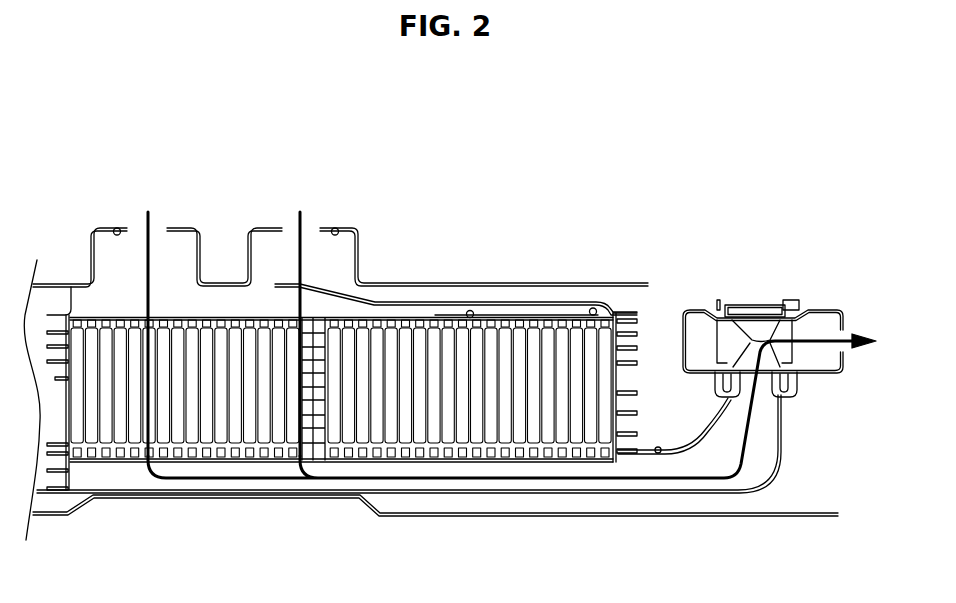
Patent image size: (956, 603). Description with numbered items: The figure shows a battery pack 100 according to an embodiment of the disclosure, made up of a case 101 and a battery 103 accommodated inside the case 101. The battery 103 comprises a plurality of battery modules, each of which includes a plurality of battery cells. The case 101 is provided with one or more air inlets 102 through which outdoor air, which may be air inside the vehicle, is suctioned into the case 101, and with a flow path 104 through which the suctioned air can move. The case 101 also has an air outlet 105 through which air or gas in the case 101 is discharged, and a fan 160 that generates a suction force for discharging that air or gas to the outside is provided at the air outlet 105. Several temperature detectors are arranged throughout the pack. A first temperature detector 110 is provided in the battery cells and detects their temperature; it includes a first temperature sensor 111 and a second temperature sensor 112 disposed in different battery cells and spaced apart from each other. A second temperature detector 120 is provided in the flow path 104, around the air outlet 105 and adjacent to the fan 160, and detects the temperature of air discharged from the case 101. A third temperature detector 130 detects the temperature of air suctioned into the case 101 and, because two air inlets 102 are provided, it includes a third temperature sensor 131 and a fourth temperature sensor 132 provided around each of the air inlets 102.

The battery pack 100 is at (472, 108).
The case 101 is at (360, 247).
The air inlet 102 is at (160, 230).
The battery 103 is at (475, 440).
The flow path 104 is at (763, 445).
The air outlet 105 is at (834, 333).
The first temperature detector 110 is at (462, 281).
The first temperature sensor 111 is at (470, 311).
The second temperature sensor 112 is at (593, 308).
The second temperature detector 120 is at (658, 447).
The third temperature detector 130 is at (241, 202).
The third temperature sensor 131 is at (117, 227).
The fourth temperature sensor 132 is at (336, 227).
The fan 160 is at (707, 308).